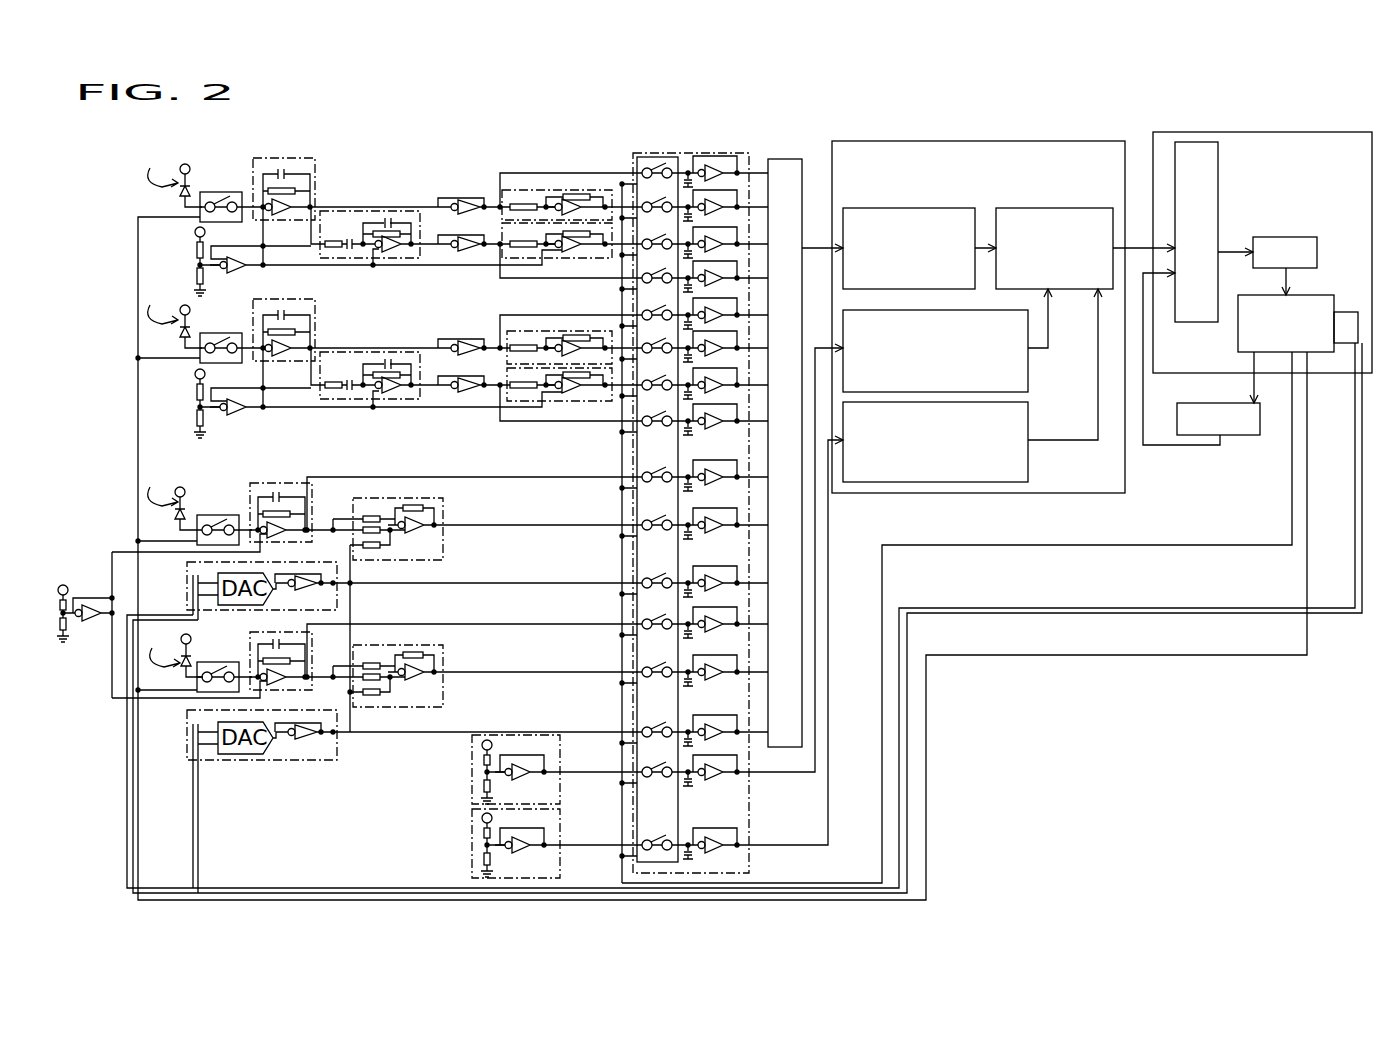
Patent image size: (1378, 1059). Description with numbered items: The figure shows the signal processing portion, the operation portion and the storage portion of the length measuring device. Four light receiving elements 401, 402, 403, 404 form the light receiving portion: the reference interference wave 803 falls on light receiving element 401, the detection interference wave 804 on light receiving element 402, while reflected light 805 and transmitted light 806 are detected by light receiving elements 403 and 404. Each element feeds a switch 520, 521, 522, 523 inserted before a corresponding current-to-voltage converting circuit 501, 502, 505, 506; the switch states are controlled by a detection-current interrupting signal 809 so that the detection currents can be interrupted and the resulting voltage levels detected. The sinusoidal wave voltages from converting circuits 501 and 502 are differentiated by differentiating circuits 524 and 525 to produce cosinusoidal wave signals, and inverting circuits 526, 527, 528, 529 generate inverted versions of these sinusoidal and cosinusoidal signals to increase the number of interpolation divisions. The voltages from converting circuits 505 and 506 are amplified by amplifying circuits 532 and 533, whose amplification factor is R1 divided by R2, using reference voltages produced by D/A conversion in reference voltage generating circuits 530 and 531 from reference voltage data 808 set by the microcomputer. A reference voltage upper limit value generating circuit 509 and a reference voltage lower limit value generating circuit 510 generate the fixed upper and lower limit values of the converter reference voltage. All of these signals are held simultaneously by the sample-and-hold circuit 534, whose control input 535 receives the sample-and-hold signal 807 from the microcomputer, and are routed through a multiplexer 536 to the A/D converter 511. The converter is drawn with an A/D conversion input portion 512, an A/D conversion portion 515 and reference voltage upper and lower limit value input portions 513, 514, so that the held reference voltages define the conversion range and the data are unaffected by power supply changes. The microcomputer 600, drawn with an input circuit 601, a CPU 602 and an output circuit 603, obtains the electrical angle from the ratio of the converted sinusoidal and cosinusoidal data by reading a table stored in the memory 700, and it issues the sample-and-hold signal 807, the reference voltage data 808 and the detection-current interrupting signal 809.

The light receiving element 401 is at (195, 168).
The light receiving element 402 is at (192, 318).
The light receiving element 403 is at (188, 493).
The light receiving element 404 is at (193, 653).
The reference interference wave 803 is at (143, 166).
The detection interference wave 804 is at (159, 300).
The reflected light 805 is at (161, 483).
The transmitted light 806 is at (163, 645).
The switch 520 is at (236, 192).
The switch 521 is at (202, 363).
The switch 522 is at (236, 515).
The switch 523 is at (216, 693).
The current-to-voltage converting circuit 501 is at (294, 158).
The current-to-voltage converting circuit 502 is at (316, 300).
The current-to-voltage converting circuit 505 is at (275, 483).
The current-to-voltage converting circuit 506 is at (311, 660).
The differentiating circuit 524 is at (362, 211).
The differentiating circuit 525 is at (370, 352).
The inverting circuit 526 is at (514, 190).
The inverting circuit 527 is at (566, 258).
The inverting circuit 528 is at (510, 331).
The inverting circuit 529 is at (566, 401).
The reference voltage generating circuit 530 is at (190, 590).
The reference voltage generating circuit 531 is at (190, 760).
The amplifying circuit 532 is at (406, 498).
The amplifying circuit 533 is at (410, 645).
The amplification factor resistance R1 is at (425, 699).
The amplification factor resistance R2 is at (420, 687).
The reference voltage upper limit value generating circuit 509 is at (472, 772).
The reference voltage lower limit value generating circuit 510 is at (472, 845).
The sample-and-hold circuit 534 is at (634, 152).
The sample-and-hold control line 535 is at (622, 185).
The multiplexer 536 is at (786, 159).
The A/D converter 511 is at (1006, 141).
The A/D conversion input portion 512 is at (916, 208).
The reference voltage upper limit value input portion 513 is at (1028, 372).
The reference voltage lower limit value input portion 514 is at (1028, 462).
The A/D conversion portion 515 is at (1080, 208).
The microcomputer 600 is at (1213, 132).
The input circuit 601 is at (1218, 226).
The CPU 602 is at (1317, 240).
The output circuit 603 is at (1238, 341).
The memory 700 is at (1242, 436).
The sample-and-hold signal 807 is at (1241, 545).
The reference voltage data 808 is at (1263, 608).
The detection-current interrupting signal 809 is at (1293, 655).